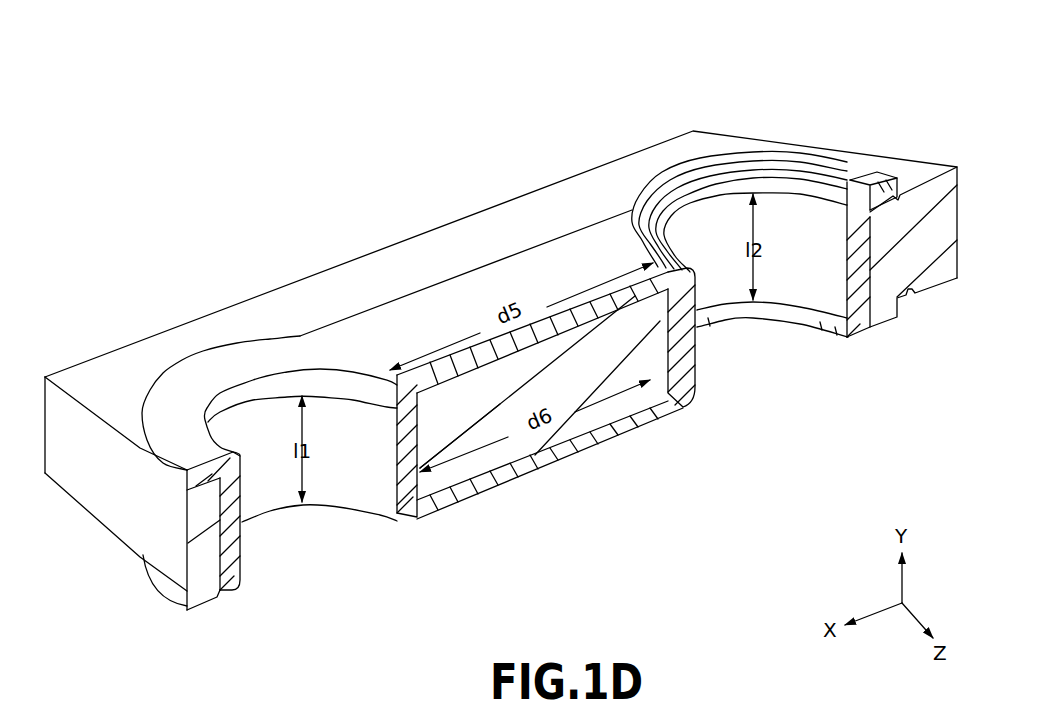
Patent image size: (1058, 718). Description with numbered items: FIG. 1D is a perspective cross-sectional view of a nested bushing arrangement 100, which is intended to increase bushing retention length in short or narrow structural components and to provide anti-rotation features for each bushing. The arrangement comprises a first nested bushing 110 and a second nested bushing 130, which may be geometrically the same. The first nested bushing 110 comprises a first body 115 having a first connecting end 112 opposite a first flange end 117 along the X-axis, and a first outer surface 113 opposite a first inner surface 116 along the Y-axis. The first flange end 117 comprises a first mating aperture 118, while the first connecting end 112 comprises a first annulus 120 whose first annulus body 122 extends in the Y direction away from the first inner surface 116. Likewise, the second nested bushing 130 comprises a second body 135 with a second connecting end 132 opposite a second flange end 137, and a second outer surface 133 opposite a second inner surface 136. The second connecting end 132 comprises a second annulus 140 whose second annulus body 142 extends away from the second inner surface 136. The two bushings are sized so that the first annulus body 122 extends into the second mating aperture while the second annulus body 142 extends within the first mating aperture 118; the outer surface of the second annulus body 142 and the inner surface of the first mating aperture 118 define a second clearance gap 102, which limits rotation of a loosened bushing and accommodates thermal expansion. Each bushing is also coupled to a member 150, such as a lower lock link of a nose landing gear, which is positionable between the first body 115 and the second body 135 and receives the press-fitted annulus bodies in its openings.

The nested bushing arrangement 100 is at (295, 210).
The second clearance gap 102 is at (645, 196).
The first nested bushing 110 is at (473, 252).
The first connecting end 112 is at (162, 403).
The first outer surface 113 is at (572, 243).
The first body 115 is at (438, 298).
The first inner surface 116 is at (525, 245).
The first flange end 117 is at (728, 160).
The first mating aperture 118 is at (820, 176).
The first annulus 120 is at (287, 403).
The first annulus body 122 is at (222, 587).
The second nested bushing 130 is at (663, 447).
The second connecting end 132 is at (882, 304).
The second outer surface 133 is at (460, 497).
The second body 135 is at (568, 448).
The second inner surface 136 is at (497, 455).
The second flange end 137 is at (180, 593).
The second annulus 140 is at (703, 208).
The second annulus body 142 is at (853, 210).
The member 150 is at (938, 257).